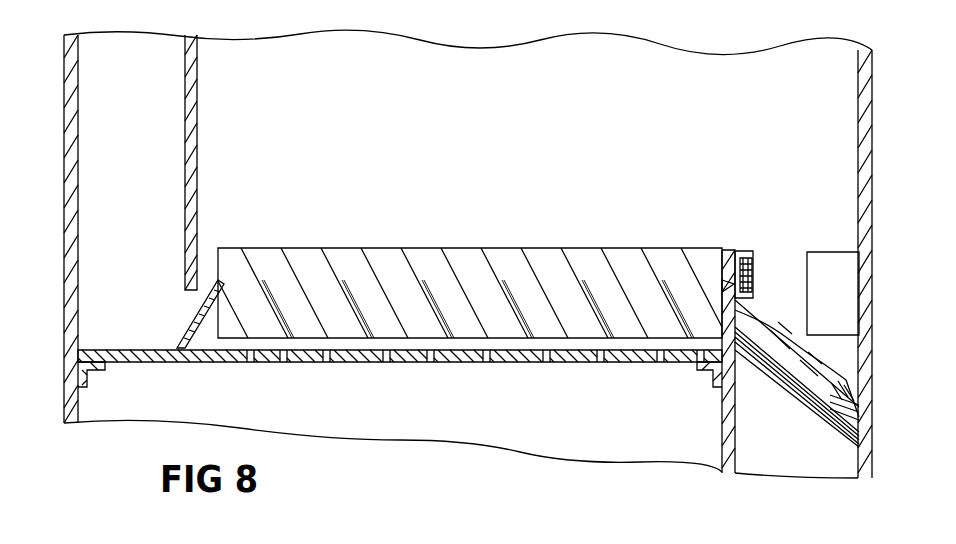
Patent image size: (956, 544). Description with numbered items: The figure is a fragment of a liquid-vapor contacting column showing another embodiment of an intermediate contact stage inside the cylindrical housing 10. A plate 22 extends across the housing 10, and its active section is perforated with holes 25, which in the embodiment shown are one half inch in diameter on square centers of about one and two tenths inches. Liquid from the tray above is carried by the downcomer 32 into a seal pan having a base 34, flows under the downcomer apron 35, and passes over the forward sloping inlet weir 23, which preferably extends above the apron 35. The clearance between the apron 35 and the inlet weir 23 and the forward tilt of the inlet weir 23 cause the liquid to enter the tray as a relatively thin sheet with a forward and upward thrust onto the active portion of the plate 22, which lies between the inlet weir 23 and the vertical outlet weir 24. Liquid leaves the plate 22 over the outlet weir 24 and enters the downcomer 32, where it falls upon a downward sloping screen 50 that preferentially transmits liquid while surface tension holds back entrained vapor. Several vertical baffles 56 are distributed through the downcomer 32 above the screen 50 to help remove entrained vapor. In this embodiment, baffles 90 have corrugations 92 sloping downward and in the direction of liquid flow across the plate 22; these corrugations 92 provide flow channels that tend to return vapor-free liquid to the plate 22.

The cylindrical housing 10 is at (65, 157).
The downcomer 32 is at (115, 128).
The downcomer apron 35 is at (185, 143).
The base 34 is at (133, 349).
The plate 22 is at (551, 363).
The holes 25 is at (480, 359).
The forward sloping inlet weir 23 is at (208, 293).
The baffles 90 is at (417, 249).
The corrugations 92 is at (568, 270).
The vertical outlet weir 24 is at (731, 281).
The vertical baffles 56 is at (823, 257).
The downward sloping screen 50 is at (812, 367).